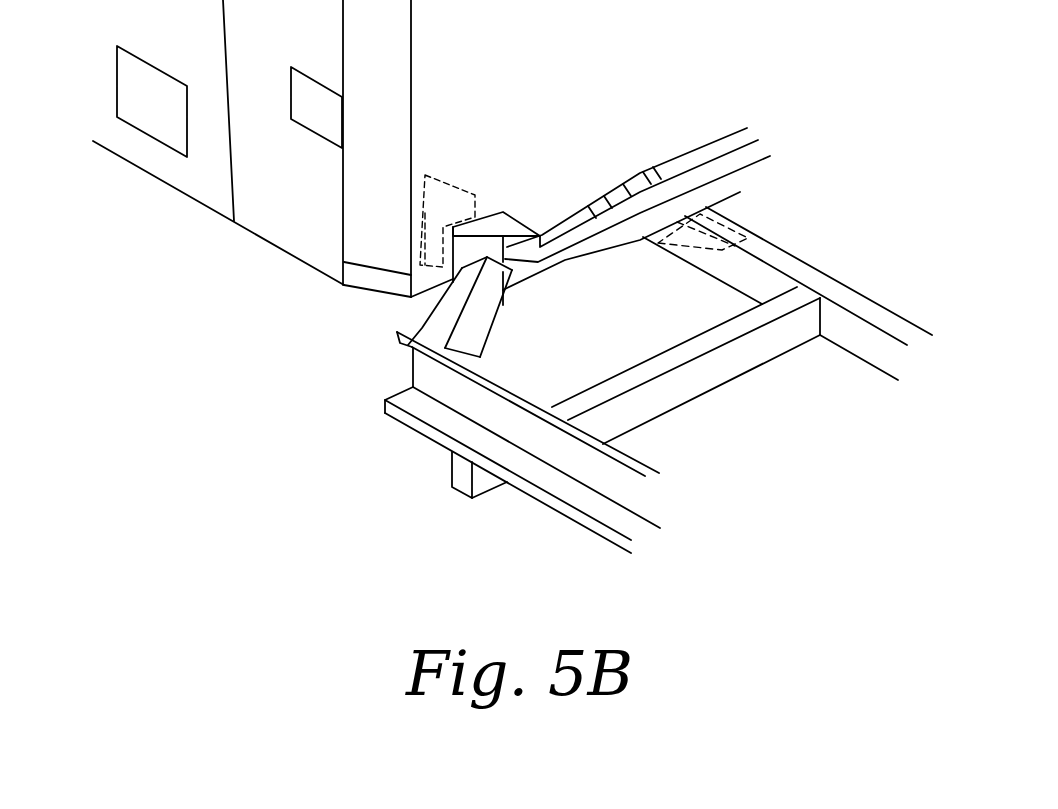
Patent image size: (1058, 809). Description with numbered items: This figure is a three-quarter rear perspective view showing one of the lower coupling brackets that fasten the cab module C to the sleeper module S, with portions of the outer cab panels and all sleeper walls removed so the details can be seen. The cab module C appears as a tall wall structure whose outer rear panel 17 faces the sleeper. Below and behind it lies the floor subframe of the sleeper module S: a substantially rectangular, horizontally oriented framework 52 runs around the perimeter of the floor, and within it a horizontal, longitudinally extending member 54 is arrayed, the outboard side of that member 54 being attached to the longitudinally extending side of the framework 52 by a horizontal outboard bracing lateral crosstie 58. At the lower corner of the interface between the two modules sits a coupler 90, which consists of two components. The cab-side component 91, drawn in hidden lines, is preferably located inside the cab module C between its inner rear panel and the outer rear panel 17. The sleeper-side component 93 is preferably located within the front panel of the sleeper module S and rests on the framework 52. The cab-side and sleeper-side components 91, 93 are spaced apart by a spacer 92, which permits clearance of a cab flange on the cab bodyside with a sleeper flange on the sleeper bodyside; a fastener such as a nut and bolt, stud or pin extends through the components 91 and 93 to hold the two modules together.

The outer rear panel 17 is at (520, 70).
The framework 52 is at (559, 271).
The longitudinally extending member 54 is at (693, 279).
The outboard bracing lateral crosstie 58 is at (601, 365).
The coupler 90 is at (403, 234).
The cab-side component 91 is at (426, 197).
The spacer 92 is at (452, 227).
The sleeper-side component 93 is at (489, 230).
The cab module C is at (108, 290).
The sleeper module S is at (414, 523).